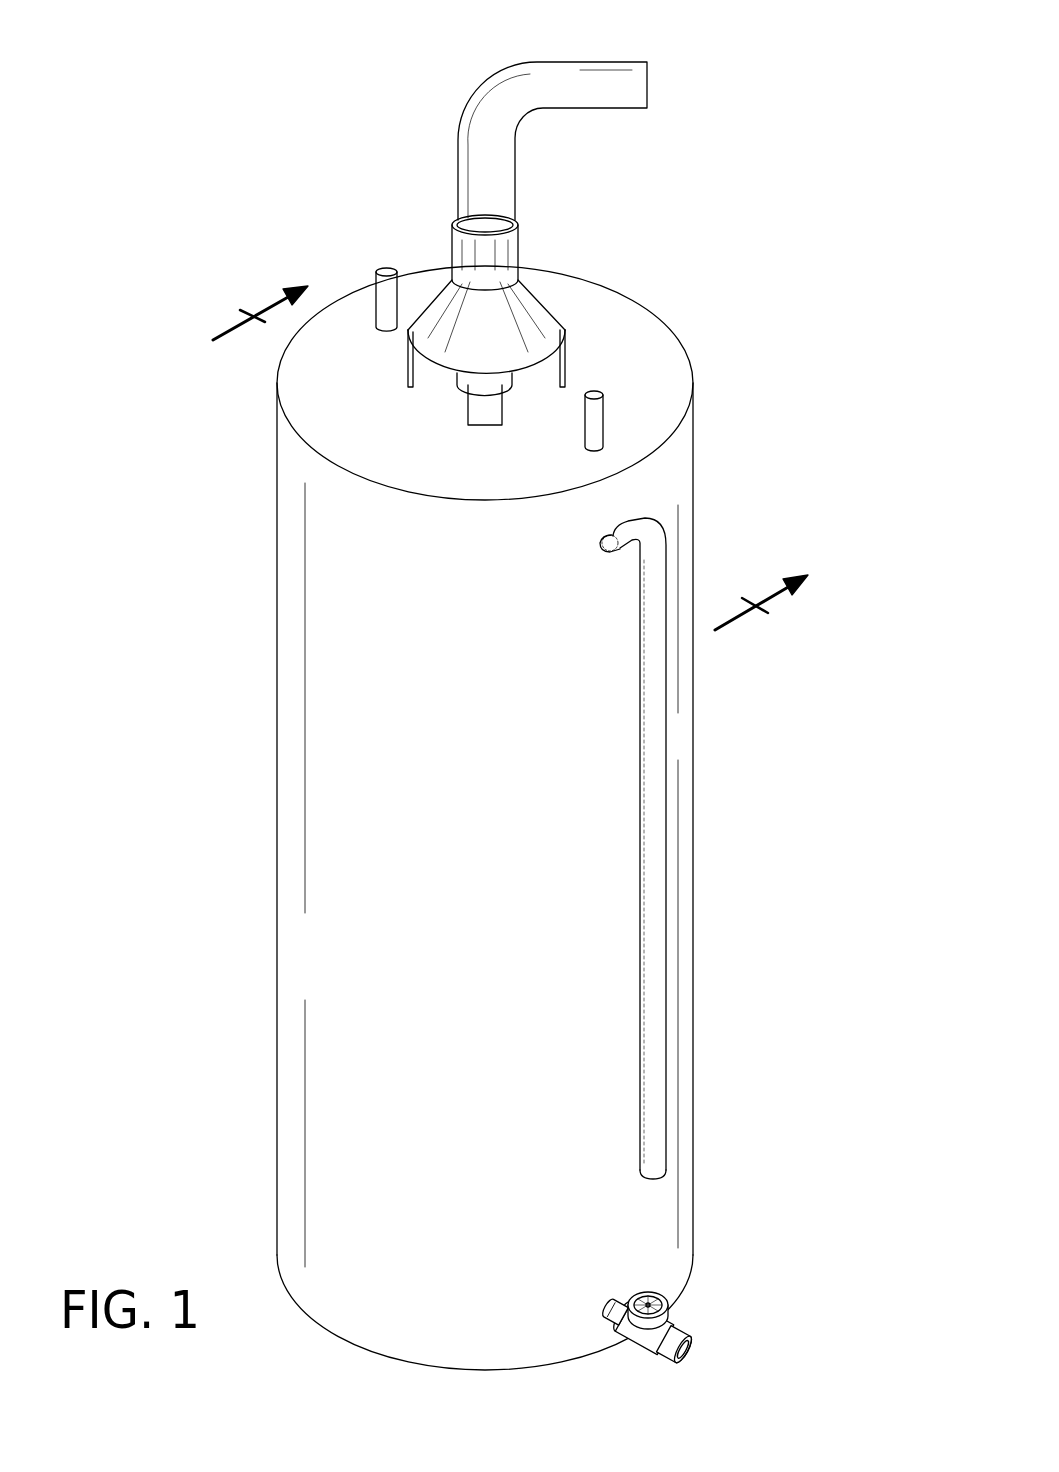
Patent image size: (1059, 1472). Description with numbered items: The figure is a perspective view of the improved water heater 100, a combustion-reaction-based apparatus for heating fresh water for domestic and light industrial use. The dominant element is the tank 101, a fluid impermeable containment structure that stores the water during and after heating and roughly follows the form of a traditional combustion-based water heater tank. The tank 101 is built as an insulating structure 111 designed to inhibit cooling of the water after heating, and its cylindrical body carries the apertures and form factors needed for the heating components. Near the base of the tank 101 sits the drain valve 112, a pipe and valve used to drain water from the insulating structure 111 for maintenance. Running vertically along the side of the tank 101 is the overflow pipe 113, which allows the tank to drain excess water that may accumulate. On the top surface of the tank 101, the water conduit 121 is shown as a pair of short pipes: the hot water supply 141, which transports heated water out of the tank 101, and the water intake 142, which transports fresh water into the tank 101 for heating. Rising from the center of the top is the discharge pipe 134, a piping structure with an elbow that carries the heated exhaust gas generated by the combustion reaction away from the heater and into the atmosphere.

The improved water heater 100 is at (197, 183).
The tank 101 is at (605, 300).
The insulating structure 111 is at (328, 703).
The drain valve 112 is at (672, 1333).
The overflow pipe 113 is at (653, 913).
The water conduit 121 is at (592, 440).
The discharge pipe 134 is at (600, 75).
The hot water supply 141 is at (382, 270).
The water intake 142 is at (601, 391).